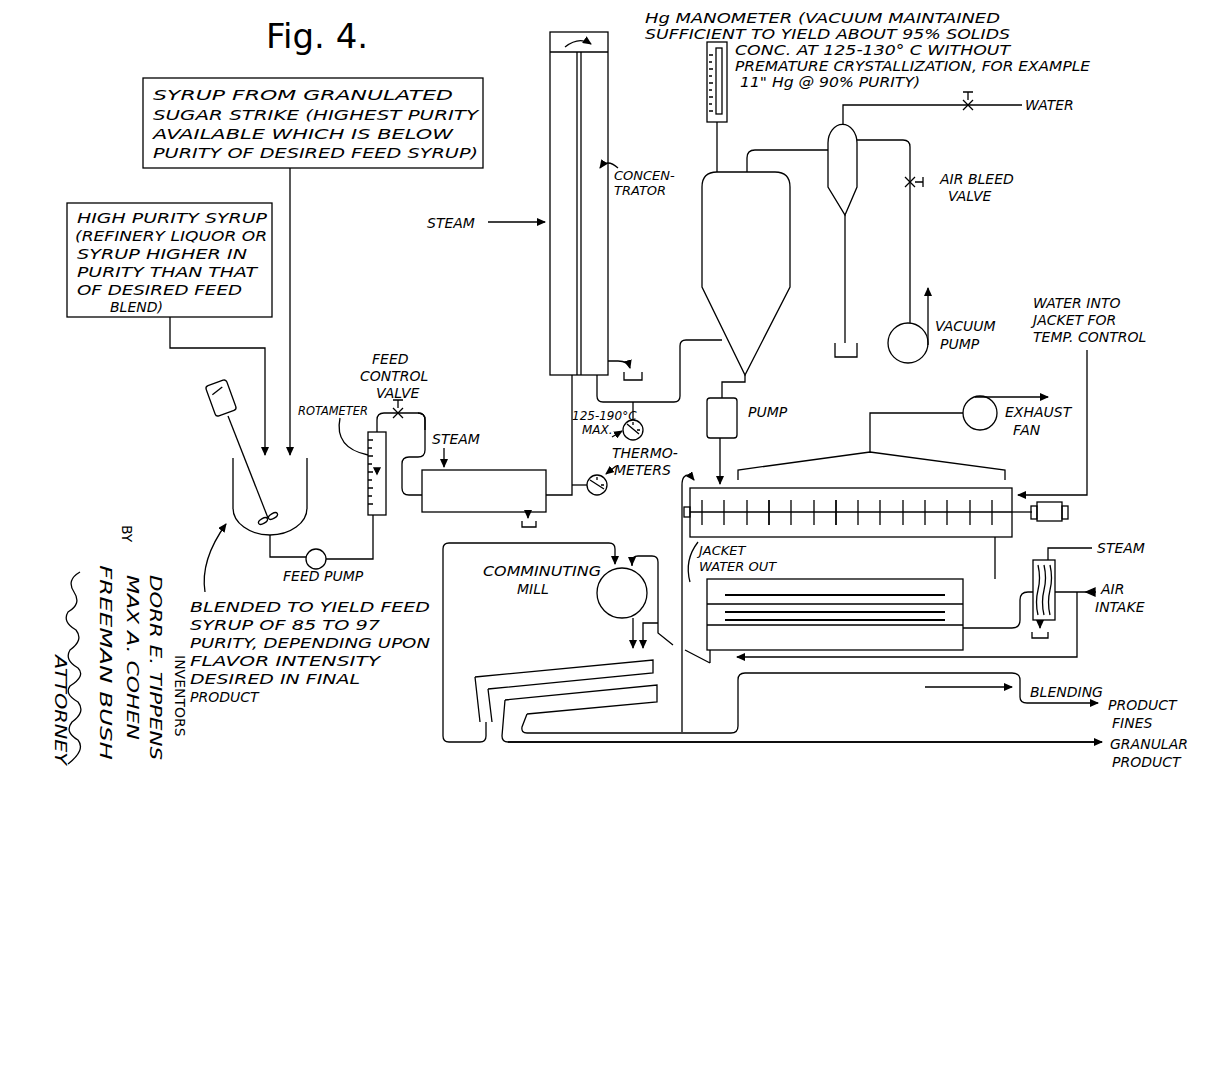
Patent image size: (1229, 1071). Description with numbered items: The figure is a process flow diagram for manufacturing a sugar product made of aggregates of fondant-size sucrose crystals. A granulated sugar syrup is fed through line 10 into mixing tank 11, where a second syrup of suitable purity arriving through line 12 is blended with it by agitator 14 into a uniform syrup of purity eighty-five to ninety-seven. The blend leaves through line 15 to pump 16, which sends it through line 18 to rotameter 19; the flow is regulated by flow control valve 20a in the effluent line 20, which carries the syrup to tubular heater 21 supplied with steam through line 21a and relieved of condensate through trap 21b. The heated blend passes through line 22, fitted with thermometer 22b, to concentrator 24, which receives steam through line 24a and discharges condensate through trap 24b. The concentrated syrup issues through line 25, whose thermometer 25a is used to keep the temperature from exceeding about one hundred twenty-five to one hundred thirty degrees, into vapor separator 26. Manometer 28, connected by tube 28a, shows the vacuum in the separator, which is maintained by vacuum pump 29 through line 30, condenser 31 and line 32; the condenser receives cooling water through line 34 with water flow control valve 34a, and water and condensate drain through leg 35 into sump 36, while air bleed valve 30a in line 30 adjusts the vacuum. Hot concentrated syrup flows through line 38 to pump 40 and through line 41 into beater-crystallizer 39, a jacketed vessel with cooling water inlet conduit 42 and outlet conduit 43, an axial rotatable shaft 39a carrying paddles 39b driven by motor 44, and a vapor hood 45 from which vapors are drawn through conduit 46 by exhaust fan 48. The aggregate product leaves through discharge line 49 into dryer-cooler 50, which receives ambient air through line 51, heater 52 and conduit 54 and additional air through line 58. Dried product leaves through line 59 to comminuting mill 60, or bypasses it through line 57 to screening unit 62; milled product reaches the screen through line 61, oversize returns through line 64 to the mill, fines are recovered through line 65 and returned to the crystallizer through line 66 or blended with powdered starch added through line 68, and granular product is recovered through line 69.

The line 10 is at (292, 295).
The mixing tank 11 is at (307, 478).
The line 12 is at (180, 350).
The agitator 14 is at (232, 432).
The line 15 is at (270, 557).
The pump 16 is at (326, 559).
The line 18 is at (373, 530).
The rotameter 19 is at (368, 500).
The line 20 is at (392, 410).
The flow control valve 20a is at (426, 404).
The tubular heater 21 is at (510, 470).
The line 21a is at (447, 457).
The trap 21b is at (536, 518).
The line 22 is at (570, 410).
The thermometer 22b is at (607, 490).
The concentrator 24 is at (548, 262).
The line 24a is at (545, 210).
The trap 24b is at (618, 361).
The line 25 is at (593, 390).
The thermometer 25a is at (643, 428).
The vapor separator 26 is at (702, 280).
The manometer 28 is at (707, 100).
The tube 28a is at (717, 135).
The vacuum pump 29 is at (916, 356).
The line 30 is at (912, 232).
The air bleed valve 30a is at (915, 190).
The condenser 31 is at (850, 163).
The line 32 is at (786, 150).
The line 34 is at (935, 107).
The water flow control valve 34a is at (974, 92).
The leg 35 is at (845, 262).
The sump 36 is at (833, 357).
The line 38 is at (748, 380).
The beater-crystallizer 39 is at (783, 538).
The rotatable shaft 39a is at (777, 508).
The paddles 39b is at (835, 508).
The pump 40 is at (737, 430).
The line 41 is at (722, 450).
The inlet conduit 42 is at (1087, 380).
The outlet conduit 43 is at (696, 573).
The motor 44 is at (1060, 522).
The vapor hood 45 is at (965, 462).
The conduit 46 is at (910, 413).
The exhaust fan 48 is at (968, 402).
The discharge line 49 is at (993, 552).
The dryer-cooler 50 is at (965, 604).
The line 51 is at (1083, 592).
The heater 52 is at (1056, 570).
The conduit 54 is at (986, 631).
The line 57 is at (648, 648).
The line 58 is at (1079, 638).
The line 59 is at (705, 665).
The comminuting mill 60 is at (598, 605).
The line 61 is at (630, 629).
The screening unit 62 is at (475, 678).
The line 64 is at (443, 600).
The line 65 is at (572, 733).
The line 66 is at (680, 713).
The line 68 is at (860, 690).
The line 69 is at (595, 742).